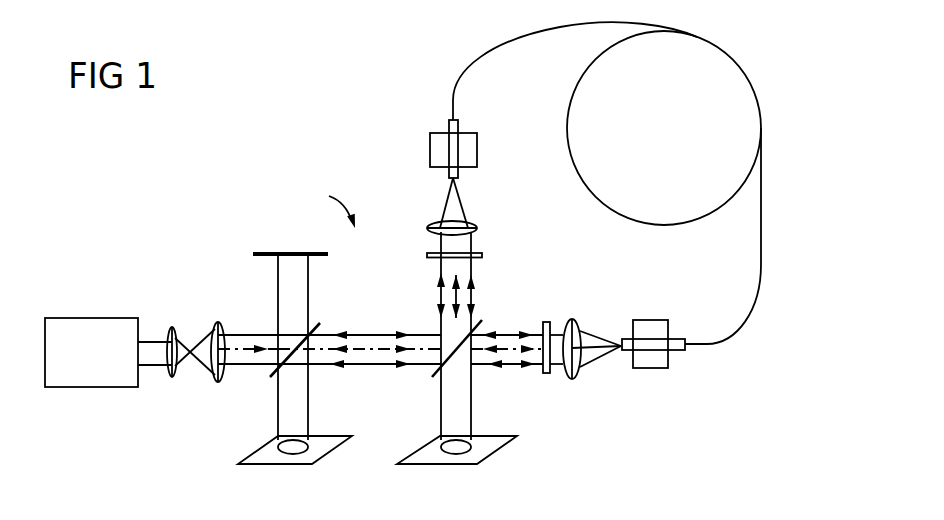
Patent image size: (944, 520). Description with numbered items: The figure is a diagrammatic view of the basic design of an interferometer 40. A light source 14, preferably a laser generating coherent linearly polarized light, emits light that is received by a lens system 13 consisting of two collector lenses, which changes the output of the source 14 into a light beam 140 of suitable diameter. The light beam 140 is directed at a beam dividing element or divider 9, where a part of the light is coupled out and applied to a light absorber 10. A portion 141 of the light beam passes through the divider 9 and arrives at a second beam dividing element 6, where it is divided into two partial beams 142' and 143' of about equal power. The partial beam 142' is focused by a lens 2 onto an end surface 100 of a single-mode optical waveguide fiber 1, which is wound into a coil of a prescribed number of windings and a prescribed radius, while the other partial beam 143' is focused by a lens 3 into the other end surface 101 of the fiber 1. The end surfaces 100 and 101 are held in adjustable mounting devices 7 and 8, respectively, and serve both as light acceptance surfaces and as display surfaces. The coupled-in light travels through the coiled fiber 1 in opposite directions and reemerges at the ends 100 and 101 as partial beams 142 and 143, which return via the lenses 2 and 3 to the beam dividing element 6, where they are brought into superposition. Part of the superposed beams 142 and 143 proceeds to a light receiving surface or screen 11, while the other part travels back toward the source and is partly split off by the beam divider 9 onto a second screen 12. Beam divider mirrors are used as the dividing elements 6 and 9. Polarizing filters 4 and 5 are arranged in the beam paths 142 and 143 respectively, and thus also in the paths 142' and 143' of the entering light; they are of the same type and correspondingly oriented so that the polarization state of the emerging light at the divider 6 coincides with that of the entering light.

The single-mode optical waveguide fiber 1 is at (767, 230).
The lens 2 is at (572, 318).
The lens 3 is at (444, 222).
The polarizing filter 4 is at (546, 322).
The polarizing filter 5 is at (447, 255).
The beam dividing element 6 is at (450, 359).
The adjustable mounting device 7 is at (649, 320).
The adjustable mounting device 8 is at (447, 150).
The beam dividing element 9 is at (299, 337).
The light absorber 10 is at (280, 252).
The light receiving surface or screen 11 is at (427, 453).
The light receiving surface or screen 12 is at (264, 457).
The lens system 13 is at (216, 374).
The light source 14 is at (108, 339).
The interferometer 40 is at (327, 198).
The end surface 100 is at (620, 351).
The end surface 101 is at (457, 180).
The light beam 140 is at (258, 336).
The portion of the light beam 141 is at (382, 326).
The partial beam 142 is at (507, 367).
The partial beam 142' is at (536, 392).
The partial beam 143 is at (478, 302).
The partial beam 143' is at (479, 278).